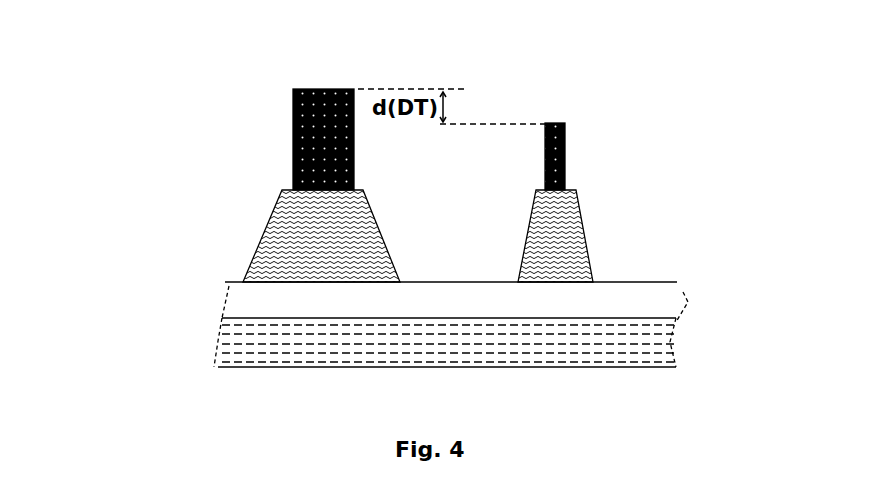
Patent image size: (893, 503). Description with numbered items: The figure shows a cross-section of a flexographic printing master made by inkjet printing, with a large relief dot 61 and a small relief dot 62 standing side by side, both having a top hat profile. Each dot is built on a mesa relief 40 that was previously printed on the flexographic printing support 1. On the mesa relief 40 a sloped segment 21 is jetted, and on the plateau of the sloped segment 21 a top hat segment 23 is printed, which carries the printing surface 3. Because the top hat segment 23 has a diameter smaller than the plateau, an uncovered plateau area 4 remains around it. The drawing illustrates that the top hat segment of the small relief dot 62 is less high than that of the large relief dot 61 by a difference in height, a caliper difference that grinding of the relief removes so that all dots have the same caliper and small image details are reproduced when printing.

The flexographic printing support 1 is at (247, 337).
The mesa relief 40 is at (240, 298).
The sloped segment 21 is at (275, 247).
The plateau area 4 is at (375, 222).
The top hat segment 23 is at (293, 143).
The printing surface 3 is at (318, 89).
The large relief dot 61 is at (258, 207).
The small relief dot 62 is at (576, 148).